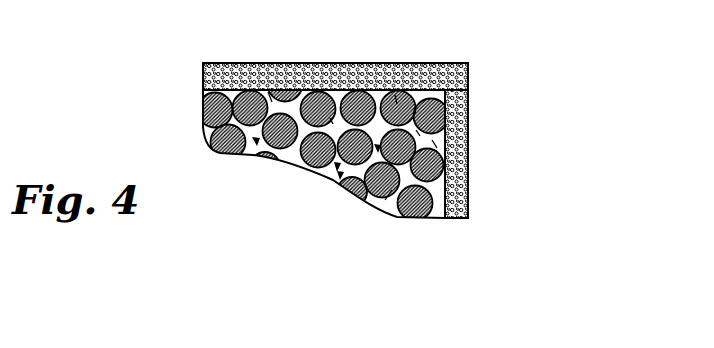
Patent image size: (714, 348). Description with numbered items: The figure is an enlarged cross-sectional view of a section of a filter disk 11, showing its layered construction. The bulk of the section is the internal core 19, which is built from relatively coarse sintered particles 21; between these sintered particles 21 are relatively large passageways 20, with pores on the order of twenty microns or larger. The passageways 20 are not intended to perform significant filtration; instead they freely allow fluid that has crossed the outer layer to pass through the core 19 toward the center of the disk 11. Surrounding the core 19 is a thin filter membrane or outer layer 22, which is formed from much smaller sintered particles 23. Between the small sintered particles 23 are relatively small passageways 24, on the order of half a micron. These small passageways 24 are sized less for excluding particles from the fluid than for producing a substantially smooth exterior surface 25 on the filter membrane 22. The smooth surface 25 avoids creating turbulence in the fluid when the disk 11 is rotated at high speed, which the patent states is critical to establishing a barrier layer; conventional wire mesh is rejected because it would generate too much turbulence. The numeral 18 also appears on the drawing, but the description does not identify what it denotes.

The filter disk 11 is at (489, 89).
The supporting layer 18 is at (111, 0).
The internal core 19 is at (338, 183).
The passageways 20 is at (437, 118).
The sintered particles 21 is at (292, 63).
The filter membrane 22 is at (372, 63).
The sintered particles 23 is at (342, 63).
The passageways 24 is at (238, 64).
The surface 25 is at (407, 63).